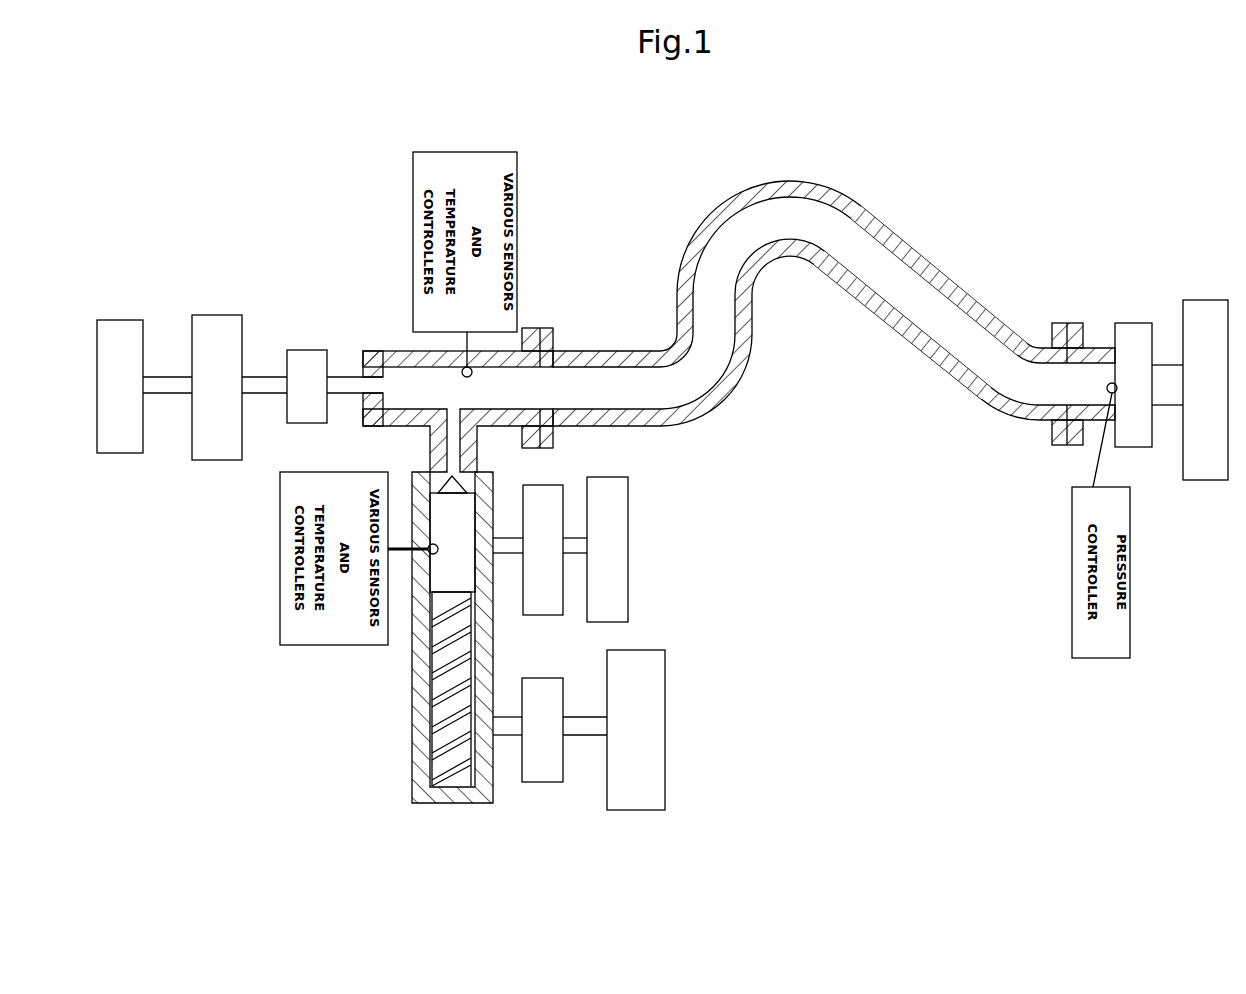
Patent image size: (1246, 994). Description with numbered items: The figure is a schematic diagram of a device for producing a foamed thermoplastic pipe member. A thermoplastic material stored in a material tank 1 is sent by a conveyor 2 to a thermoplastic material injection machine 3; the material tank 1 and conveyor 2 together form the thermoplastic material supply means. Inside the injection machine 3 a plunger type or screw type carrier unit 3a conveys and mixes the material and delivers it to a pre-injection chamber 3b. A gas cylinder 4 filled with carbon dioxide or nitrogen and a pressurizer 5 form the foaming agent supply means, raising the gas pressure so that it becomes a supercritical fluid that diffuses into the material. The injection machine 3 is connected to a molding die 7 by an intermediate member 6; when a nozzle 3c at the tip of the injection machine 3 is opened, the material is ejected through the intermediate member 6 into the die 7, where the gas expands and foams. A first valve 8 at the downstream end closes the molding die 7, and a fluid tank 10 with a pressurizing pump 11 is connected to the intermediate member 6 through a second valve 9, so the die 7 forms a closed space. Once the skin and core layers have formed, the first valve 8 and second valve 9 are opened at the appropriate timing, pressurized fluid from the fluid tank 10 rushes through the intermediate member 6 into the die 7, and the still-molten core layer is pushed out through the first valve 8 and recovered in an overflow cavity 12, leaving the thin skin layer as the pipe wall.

The material tank 1 is at (630, 718).
The conveyor 2 is at (538, 707).
The thermoplastic material injection machine 3 is at (424, 637).
The carrier unit 3a is at (409, 689).
The pre-injection chamber 3b is at (481, 572).
The nozzle 3c is at (410, 464).
The gas cylinder 4 is at (612, 534).
The pressurizer 5 is at (538, 528).
The intermediate member 6 is at (458, 380).
The molding die 7 is at (834, 313).
The first valve 8 is at (1135, 354).
The second valve 9 is at (312, 356).
The fluid tank 10 is at (129, 350).
The pressurizing pump 11 is at (204, 353).
The overflow cavity 12 is at (1199, 359).